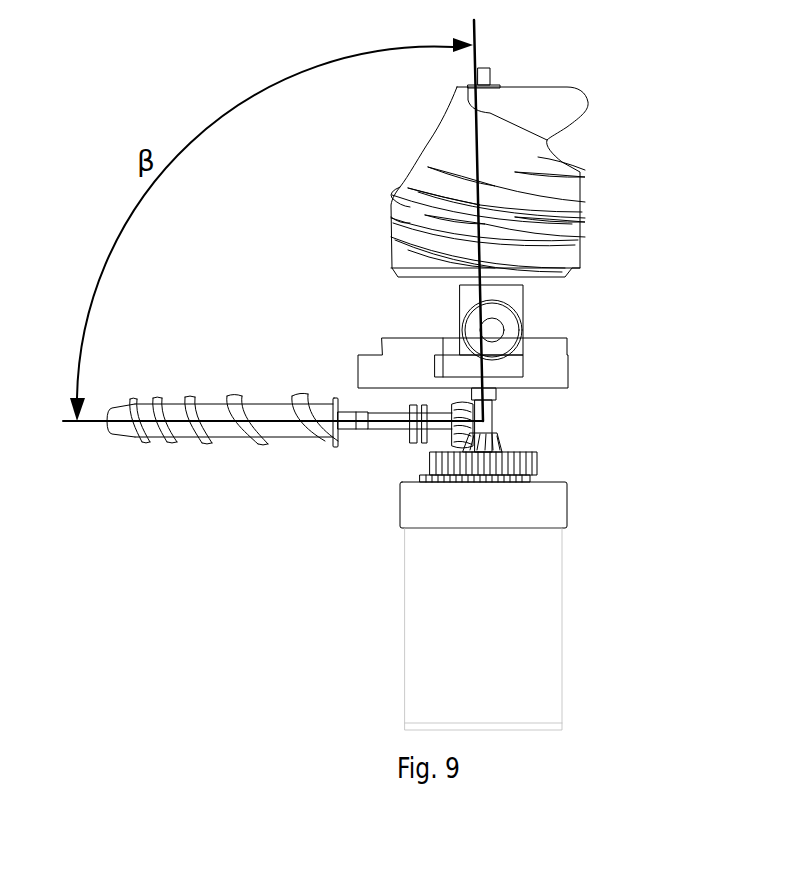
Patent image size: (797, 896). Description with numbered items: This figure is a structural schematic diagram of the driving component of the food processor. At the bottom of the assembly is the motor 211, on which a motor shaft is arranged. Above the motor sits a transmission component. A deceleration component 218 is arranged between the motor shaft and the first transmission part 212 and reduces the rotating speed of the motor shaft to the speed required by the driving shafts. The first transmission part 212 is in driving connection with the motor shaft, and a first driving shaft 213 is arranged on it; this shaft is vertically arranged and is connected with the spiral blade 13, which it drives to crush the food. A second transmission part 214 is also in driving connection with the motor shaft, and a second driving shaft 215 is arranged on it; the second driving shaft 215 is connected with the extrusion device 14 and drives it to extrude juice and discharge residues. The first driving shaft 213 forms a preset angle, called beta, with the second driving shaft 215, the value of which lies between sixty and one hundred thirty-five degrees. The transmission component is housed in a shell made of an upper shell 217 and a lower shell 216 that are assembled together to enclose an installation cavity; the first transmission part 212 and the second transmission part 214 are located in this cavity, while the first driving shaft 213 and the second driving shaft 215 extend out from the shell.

The spiral blade 13 is at (462, 149).
The extrusion device 14 is at (232, 417).
The second driving shaft 215 is at (353, 423).
The upper shell 217 is at (527, 352).
The first driving shaft 213 is at (485, 413).
The second transmission part 214 is at (463, 423).
The first transmission part 212 is at (492, 442).
The deceleration component 218 is at (513, 471).
The lower shell 216 is at (543, 517).
The motor 211 is at (527, 663).